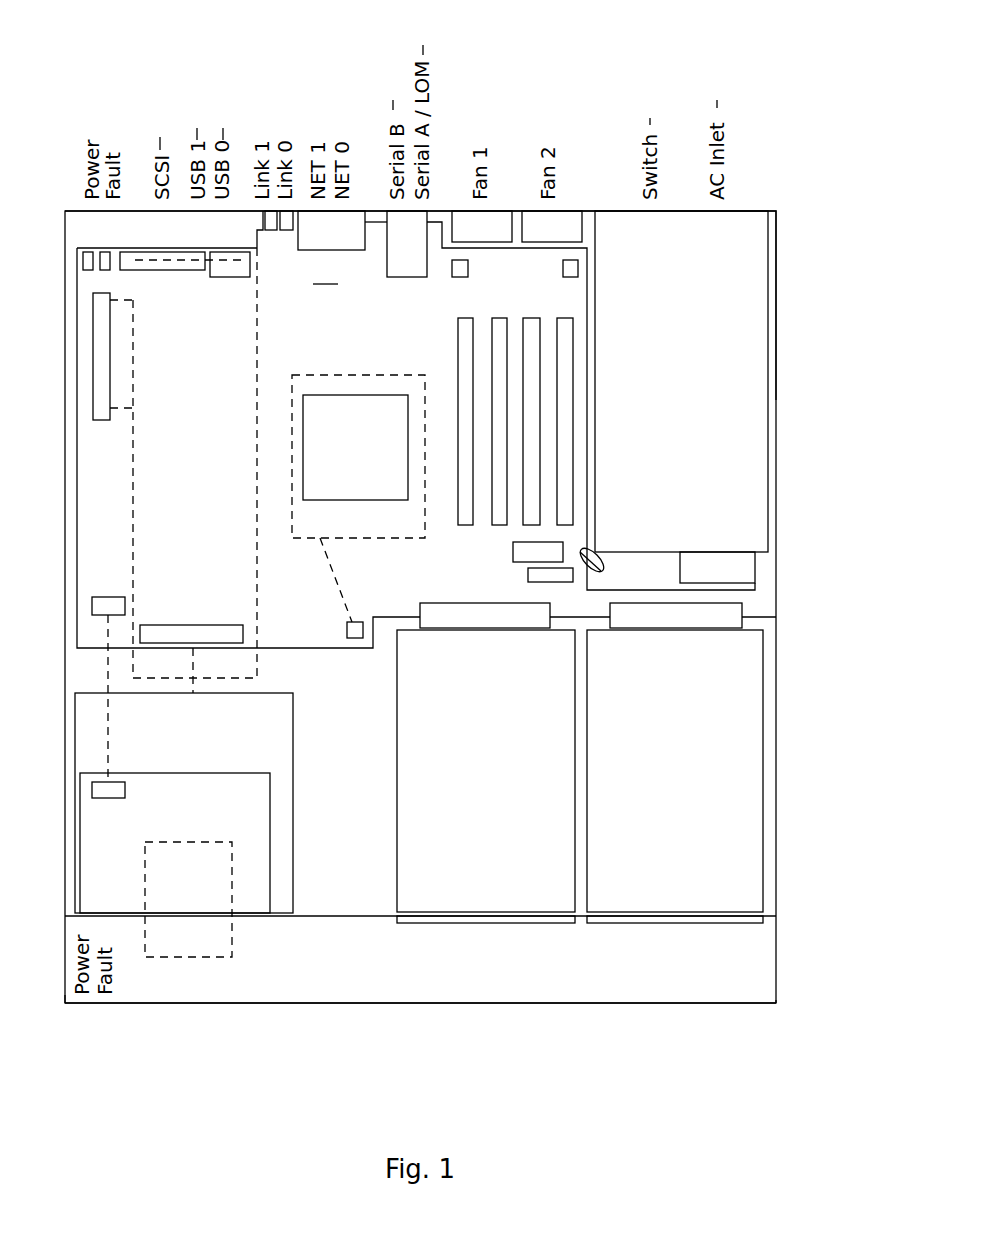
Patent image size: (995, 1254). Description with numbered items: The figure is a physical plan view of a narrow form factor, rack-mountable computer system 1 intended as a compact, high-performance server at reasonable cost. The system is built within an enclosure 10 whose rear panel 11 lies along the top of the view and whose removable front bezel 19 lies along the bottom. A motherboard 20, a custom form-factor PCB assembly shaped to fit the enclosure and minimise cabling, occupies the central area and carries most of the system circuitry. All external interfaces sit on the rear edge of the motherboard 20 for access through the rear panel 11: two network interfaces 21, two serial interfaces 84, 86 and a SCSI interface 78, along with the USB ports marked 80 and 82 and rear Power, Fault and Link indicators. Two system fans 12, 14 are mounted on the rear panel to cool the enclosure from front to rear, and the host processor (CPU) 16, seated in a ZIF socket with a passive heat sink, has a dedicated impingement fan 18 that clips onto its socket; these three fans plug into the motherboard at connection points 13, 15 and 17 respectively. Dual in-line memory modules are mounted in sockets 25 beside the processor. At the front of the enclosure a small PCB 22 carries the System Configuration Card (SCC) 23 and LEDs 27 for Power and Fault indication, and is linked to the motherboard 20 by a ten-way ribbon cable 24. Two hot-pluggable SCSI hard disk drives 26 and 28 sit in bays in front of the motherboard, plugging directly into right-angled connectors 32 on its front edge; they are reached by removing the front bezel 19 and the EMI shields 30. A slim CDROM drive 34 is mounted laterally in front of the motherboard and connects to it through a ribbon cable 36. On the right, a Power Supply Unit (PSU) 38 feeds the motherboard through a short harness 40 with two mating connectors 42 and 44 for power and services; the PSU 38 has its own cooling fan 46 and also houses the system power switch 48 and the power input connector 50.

The computer system 1 is at (248, 1068).
The enclosure 10 is at (776, 840).
The rear panel 11 is at (750, 208).
The system fan 12 is at (478, 127).
The fan connection point 13 is at (459, 278).
The system fan 14 is at (548, 127).
The fan connection point 15 is at (562, 268).
The host processor (CPU) 16 is at (353, 400).
The fan connection point 17 is at (347, 630).
The impingement fan 18 is at (318, 520).
The front bezel 19 is at (392, 975).
The motherboard 20 is at (426, 444).
The network interfaces 21 is at (307, 115).
The SCC reader / small PCB 22 is at (90, 893).
The System Configuration Card (SCC) 23 is at (157, 950).
The ribbon cable 24 is at (102, 673).
The DIMM sockets 25 is at (565, 527).
The SCSI hard disk drive 26 is at (468, 892).
The LEDs 27 is at (65, 995).
The SCSI hard disk drive 28 is at (673, 892).
The EMI shields 30 is at (568, 957).
The right-angled connectors 32 is at (437, 612).
The CDROM drive 34 is at (92, 743).
The ribbon cable 36 is at (193, 658).
The Power Supply Unit (PSU) 38 is at (745, 312).
The harness 40 is at (603, 570).
The mating connector 42 is at (513, 548).
The mating connector 44 is at (553, 582).
The cooling fan 46 is at (755, 565).
The system power switch 48 is at (650, 118).
The power input connector 50 is at (717, 100).
The SCSI interface 78 is at (160, 137).
The USB 0 port 80 is at (223, 128).
The USB 1 port 82 is at (197, 128).
The serial interface 84 is at (423, 45).
The serial interface 86 is at (393, 100).